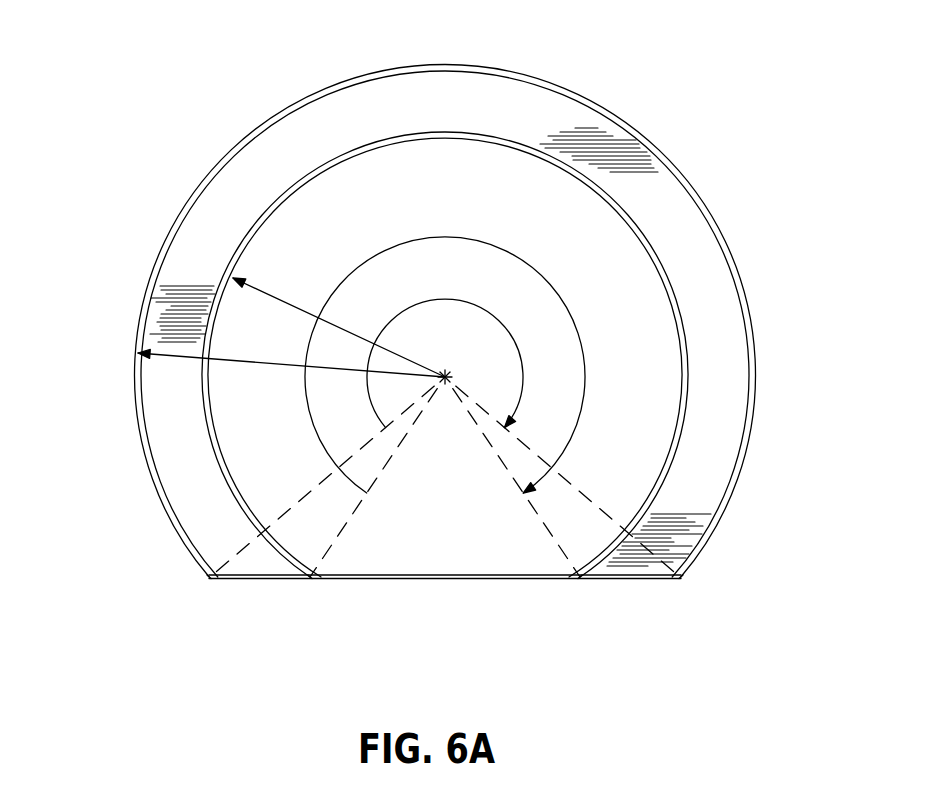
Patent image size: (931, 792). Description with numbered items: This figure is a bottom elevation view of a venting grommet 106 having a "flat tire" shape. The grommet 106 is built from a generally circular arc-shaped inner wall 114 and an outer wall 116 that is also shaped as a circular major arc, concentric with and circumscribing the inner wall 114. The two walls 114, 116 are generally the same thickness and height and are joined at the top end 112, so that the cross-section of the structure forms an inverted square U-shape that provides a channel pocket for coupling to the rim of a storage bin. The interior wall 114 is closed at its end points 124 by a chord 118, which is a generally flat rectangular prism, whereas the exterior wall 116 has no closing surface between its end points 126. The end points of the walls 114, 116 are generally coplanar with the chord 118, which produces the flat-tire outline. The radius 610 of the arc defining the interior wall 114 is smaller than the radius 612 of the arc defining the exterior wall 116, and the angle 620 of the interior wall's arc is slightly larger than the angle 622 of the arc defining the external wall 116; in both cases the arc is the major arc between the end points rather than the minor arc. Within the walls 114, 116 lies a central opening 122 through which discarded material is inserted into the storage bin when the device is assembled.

The venting grommet 106 is at (718, 112).
The top end 112 is at (253, 174).
The inner wall 114 is at (214, 456).
The outer wall 116 is at (135, 408).
The chord 118 is at (453, 580).
The central opening 122 is at (487, 190).
The end points of the interior wall 124 is at (312, 580).
The end points of the exterior wall 126 is at (210, 580).
The radius of the interior wall arc 610 is at (270, 295).
The radius of the exterior wall arc 612 is at (170, 356).
The angle of the interior wall arc 620 is at (574, 313).
The angle of the exterior wall arc 622 is at (476, 300).